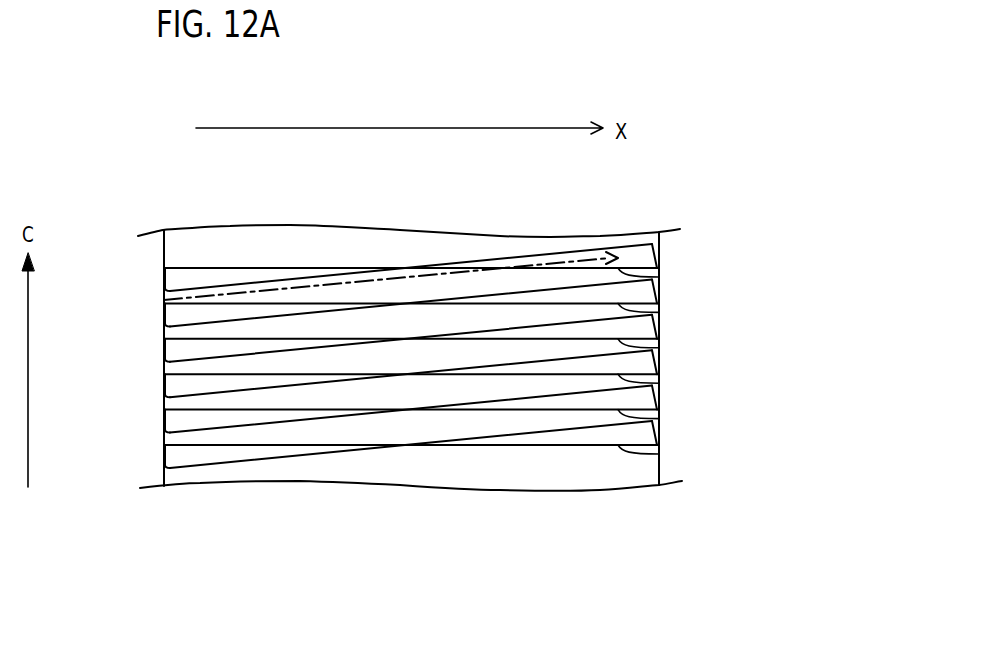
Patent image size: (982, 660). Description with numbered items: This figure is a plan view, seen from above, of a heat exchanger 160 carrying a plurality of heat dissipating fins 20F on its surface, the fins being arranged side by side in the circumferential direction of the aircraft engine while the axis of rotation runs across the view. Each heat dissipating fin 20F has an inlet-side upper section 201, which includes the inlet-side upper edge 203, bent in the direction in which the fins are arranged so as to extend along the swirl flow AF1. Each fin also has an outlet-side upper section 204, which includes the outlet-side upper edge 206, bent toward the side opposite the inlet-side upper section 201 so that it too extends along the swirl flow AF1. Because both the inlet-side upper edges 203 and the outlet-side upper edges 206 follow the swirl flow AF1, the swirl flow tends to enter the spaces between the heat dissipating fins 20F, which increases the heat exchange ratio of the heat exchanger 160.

The heat exchanger 160 is at (424, 176).
The heat dissipating fin 20F is at (655, 276).
The inlet-side upper section 201 is at (178, 386).
The inlet-side upper edge 203 is at (253, 390).
The outlet-side upper section 204 is at (642, 251).
The outlet-side upper edge 206 is at (526, 327).
The swirl flow AF1 is at (164, 300).